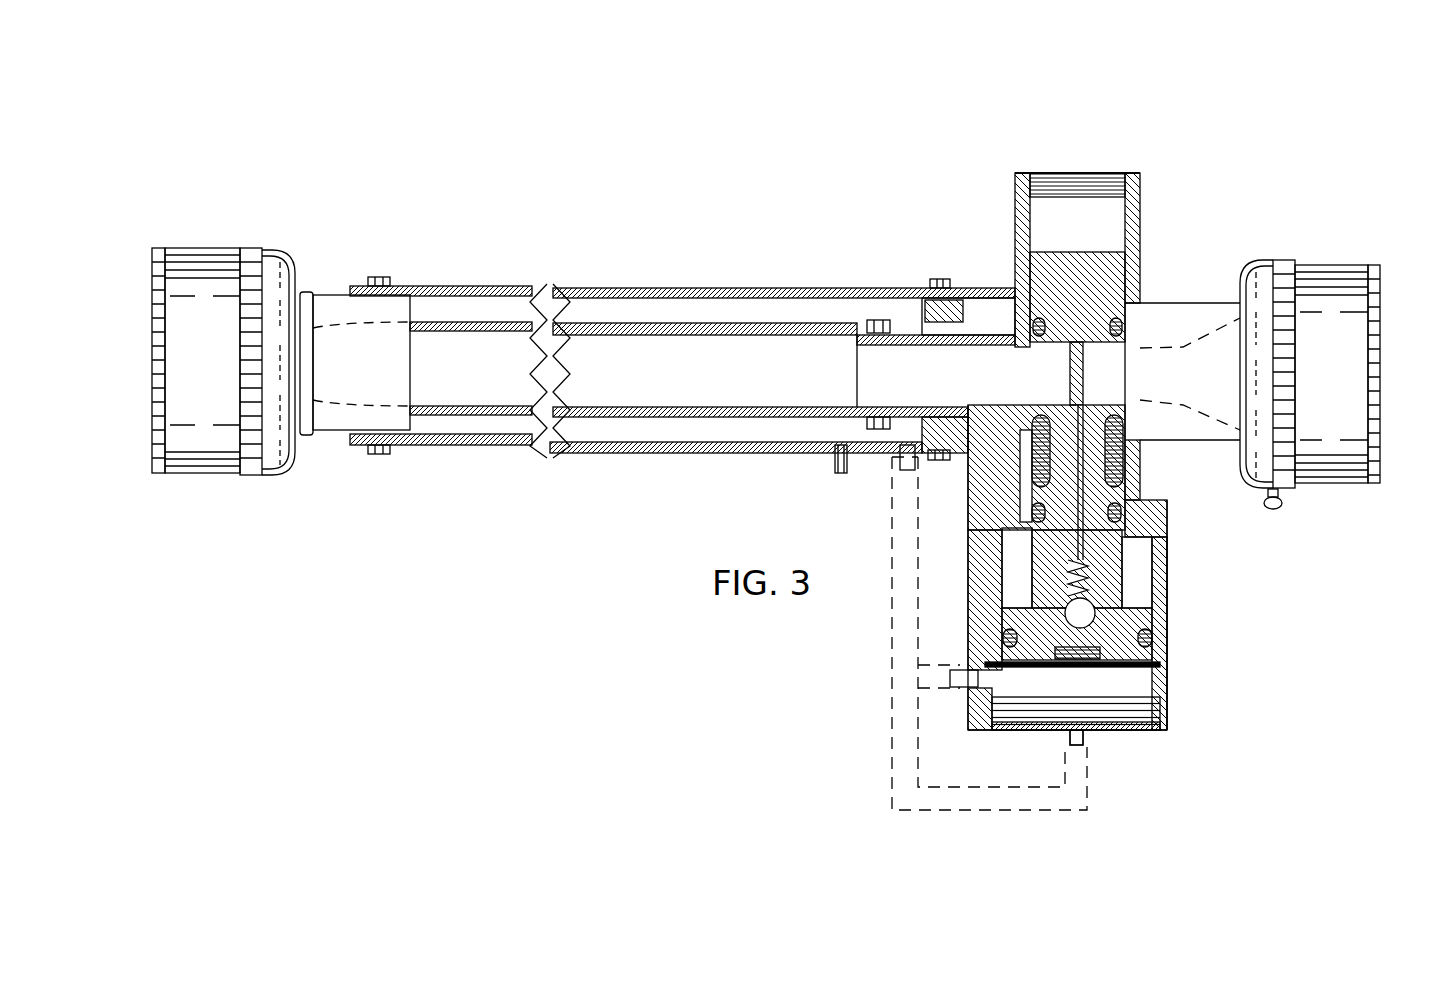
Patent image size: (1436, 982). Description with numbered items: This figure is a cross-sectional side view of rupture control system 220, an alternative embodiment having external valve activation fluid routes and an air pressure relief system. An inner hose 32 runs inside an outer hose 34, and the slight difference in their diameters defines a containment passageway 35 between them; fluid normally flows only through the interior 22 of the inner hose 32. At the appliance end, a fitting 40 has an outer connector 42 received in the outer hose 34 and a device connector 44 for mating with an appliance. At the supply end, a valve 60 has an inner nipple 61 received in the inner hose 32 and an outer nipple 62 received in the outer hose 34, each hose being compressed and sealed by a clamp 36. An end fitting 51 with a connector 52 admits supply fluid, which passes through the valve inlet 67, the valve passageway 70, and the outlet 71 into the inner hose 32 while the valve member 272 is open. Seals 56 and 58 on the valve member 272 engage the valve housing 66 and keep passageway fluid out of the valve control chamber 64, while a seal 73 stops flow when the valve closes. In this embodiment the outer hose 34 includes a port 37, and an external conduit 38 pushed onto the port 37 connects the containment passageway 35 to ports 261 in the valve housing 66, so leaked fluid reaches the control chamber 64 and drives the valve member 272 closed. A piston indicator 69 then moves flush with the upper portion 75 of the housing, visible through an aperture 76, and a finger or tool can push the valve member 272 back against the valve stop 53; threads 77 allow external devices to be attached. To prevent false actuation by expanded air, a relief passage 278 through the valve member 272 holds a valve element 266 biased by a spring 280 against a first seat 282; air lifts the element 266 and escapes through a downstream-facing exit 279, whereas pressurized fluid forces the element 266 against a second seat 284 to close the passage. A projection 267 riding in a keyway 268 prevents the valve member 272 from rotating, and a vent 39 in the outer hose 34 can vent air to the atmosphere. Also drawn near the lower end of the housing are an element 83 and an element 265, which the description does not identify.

The interior of inner hose 22 is at (466, 368).
The inner hose 32 is at (792, 323).
The outer hose 34 is at (702, 288).
The containment/control passageway 35 is at (752, 318).
The clamp 36 is at (382, 277).
The port 37 is at (903, 468).
The external conduit 38 is at (892, 772).
The vent 39 is at (835, 465).
The fitting 40 is at (252, 478).
The outer connector 42 is at (326, 303).
The device connector 44 is at (135, 420).
The end fitting 51 is at (1372, 490).
The connector 52 is at (1385, 317).
The valve stop 53 is at (1067, 660).
The seal 56 is at (1133, 367).
The seal 58 is at (1125, 518).
The valve 60 is at (1172, 616).
The inner nipple 61 is at (852, 323).
The outer nipple 62 is at (1022, 386).
The valve control chamber 64 is at (1160, 712).
The valve housing 66 is at (1110, 590).
The valve inlet 67 is at (1135, 368).
The piston indicator 69 is at (1100, 283).
The valve passageway 70 is at (1098, 365).
The outlet 71 is at (1018, 387).
The seal 73 is at (1125, 465).
The upper portion of valve housing 75 is at (1125, 180).
The aperture 76 is at (1130, 178).
The threads 77 is at (1073, 183).
The seal 83 is at (1150, 645).
The rupture control system 220 is at (1262, 577).
The ports 261 is at (958, 688).
The gasket 265 is at (1160, 665).
The valve element 266 is at (1082, 620).
The projection 267 is at (1032, 525).
The keyway 268 is at (1022, 462).
The valve member 272 is at (1135, 600).
The relief passage 278 is at (1130, 535).
The exit 279 is at (1000, 345).
The spring 280 is at (1015, 632).
The first seat 282 is at (988, 727).
The second seat 284 is at (1068, 568).